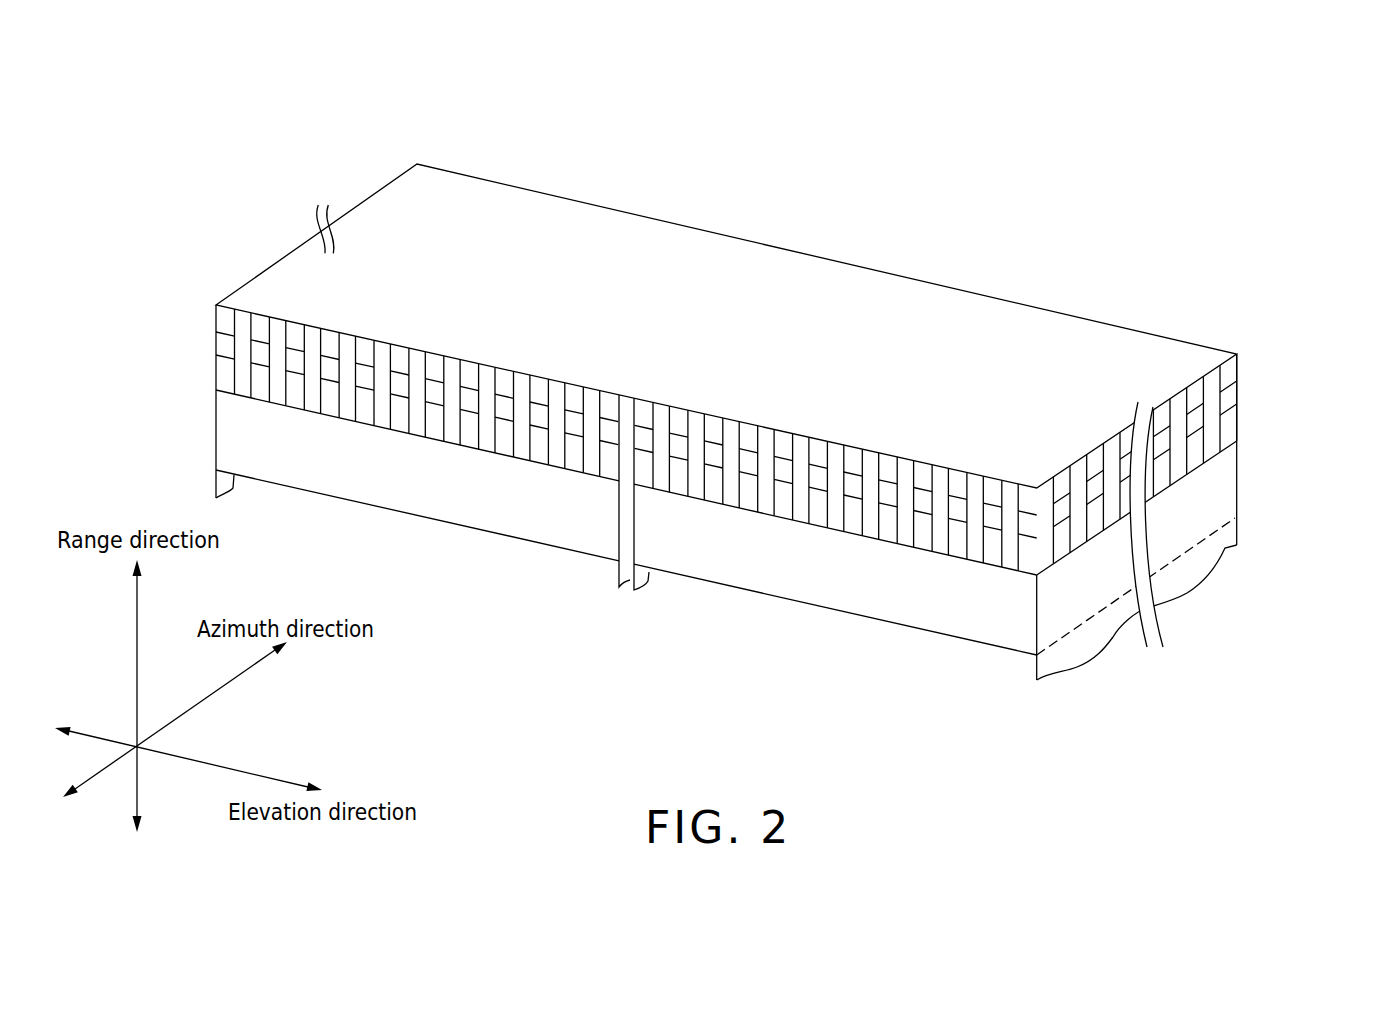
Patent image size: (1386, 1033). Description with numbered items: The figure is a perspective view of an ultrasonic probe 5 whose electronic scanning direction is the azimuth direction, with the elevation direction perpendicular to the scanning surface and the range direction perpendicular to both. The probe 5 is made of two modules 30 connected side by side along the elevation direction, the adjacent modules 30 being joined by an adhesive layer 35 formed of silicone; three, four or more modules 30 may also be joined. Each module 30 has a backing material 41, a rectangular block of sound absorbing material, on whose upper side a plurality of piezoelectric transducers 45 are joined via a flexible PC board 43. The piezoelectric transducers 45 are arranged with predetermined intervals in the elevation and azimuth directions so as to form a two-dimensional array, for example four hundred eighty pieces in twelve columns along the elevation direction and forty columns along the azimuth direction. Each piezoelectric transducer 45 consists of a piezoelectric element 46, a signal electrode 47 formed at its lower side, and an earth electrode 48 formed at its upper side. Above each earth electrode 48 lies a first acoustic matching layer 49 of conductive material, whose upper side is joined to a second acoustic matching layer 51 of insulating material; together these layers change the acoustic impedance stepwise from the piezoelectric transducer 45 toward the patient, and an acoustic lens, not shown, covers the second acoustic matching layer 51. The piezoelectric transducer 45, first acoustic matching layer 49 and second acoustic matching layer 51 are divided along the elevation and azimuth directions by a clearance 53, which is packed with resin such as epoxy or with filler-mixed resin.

The ultrasonic probe 5 is at (880, 159).
The module 30 is at (431, 530).
The adhesive layer 35 is at (627, 544).
The backing material 41 is at (472, 512).
The flexible PC board 43 is at (1209, 558).
The piezoelectric transducer 45 is at (1320, 402).
The piezoelectric element 46 is at (1228, 427).
The signal electrode 47 is at (1238, 437).
The earth electrode 48 is at (1240, 402).
The first acoustic matching layer 49 is at (1238, 390).
The second acoustic matching layer 51 is at (1232, 367).
The clearance 53 is at (1012, 558).